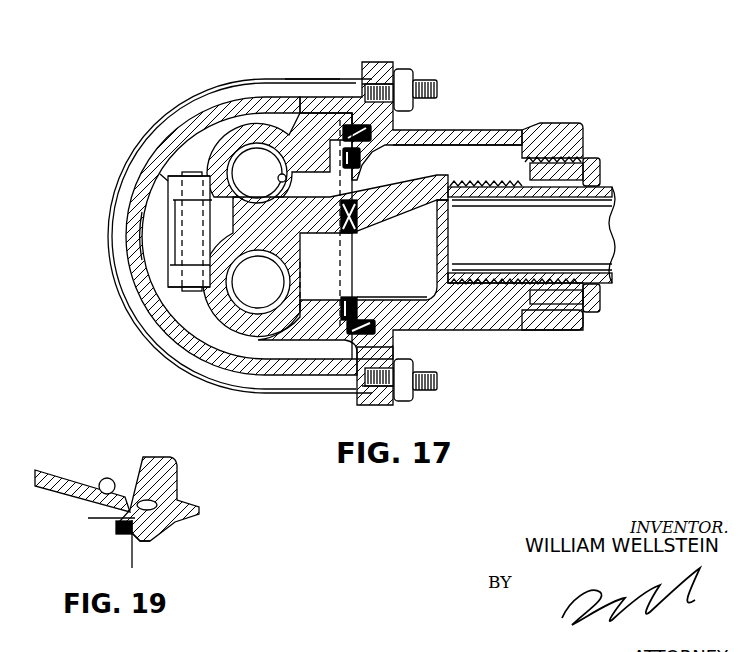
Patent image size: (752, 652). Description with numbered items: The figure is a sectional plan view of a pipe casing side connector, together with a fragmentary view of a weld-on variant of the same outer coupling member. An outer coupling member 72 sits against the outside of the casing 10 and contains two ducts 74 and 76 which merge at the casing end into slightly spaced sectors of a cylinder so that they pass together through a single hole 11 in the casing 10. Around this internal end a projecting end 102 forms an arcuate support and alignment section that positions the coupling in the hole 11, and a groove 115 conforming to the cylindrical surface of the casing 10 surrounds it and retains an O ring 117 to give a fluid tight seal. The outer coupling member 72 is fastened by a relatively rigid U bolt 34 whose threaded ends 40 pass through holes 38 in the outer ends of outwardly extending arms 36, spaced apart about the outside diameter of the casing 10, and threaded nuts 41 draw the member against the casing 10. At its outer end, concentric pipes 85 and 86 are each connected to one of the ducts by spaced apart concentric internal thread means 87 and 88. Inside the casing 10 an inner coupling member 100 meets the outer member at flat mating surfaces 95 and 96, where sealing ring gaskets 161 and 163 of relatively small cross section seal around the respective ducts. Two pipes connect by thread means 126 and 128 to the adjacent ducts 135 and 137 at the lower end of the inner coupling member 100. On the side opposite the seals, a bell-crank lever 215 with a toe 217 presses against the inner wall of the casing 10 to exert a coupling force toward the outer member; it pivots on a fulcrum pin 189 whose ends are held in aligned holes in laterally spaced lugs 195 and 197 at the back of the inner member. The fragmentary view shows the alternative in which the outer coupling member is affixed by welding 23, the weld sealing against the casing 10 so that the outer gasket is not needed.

In FIG. 17, the casing 10 is at (137, 270).
In FIG. 19, the casing 10 is at (63, 470).
In FIG. 17, the hole 11 is at (340, 298).
In FIG. 19, the hole 11 is at (107, 525).
In FIG. 19, the welding 23 is at (117, 453).
In FIG. 17, the U bolt 34 is at (284, 79).
In FIG. 17, the outwardly extending arms 36 is at (371, 63).
In FIG. 17, the holes 38 is at (356, 82).
In FIG. 17, the threaded ends 40 is at (430, 80).
In FIG. 17, the threaded nuts 41 is at (407, 73).
In FIG. 17, the outer coupling member 72 is at (547, 131).
In FIG. 17, the duct 74 is at (430, 238).
In FIG. 17, the duct 76 is at (463, 157).
In FIG. 17, the concentric pipe 85 is at (611, 188).
In FIG. 17, the concentric pipe 86 is at (595, 160).
In FIG. 17, the internal thread means 87 is at (474, 178).
In FIG. 17, the internal thread means 88 is at (563, 162).
In FIG. 17, the flat mating surface 95 is at (342, 258).
In FIG. 17, the flat mating surface 96 is at (349, 242).
In FIG. 17, the inner coupling member 100 is at (203, 316).
In FIG. 19, the projecting end 102 is at (147, 540).
In FIG. 17, the groove 115 is at (394, 119).
In FIG. 19, the groove 115 is at (150, 502).
In FIG. 17, the O ring 117 is at (373, 134).
In FIG. 17, the thread means 126 is at (287, 180).
In FIG. 17, the thread means 128 is at (292, 278).
In FIG. 17, the duct 135 is at (268, 175).
In FIG. 17, the duct 137 is at (264, 300).
In FIG. 17, the sealing ring gasket 161 is at (357, 170).
In FIG. 19, the sealing ring gasket 161 is at (120, 537).
In FIG. 17, the sealing ring gasket 163 is at (350, 298).
In FIG. 17, the fulcrum pin 189 is at (190, 172).
In FIG. 17, the lug 195 is at (162, 173).
In FIG. 17, the lug 197 is at (158, 316).
In FIG. 17, the bell-crank lever 215 is at (142, 237).
In FIG. 17, the toe 217 is at (166, 272).